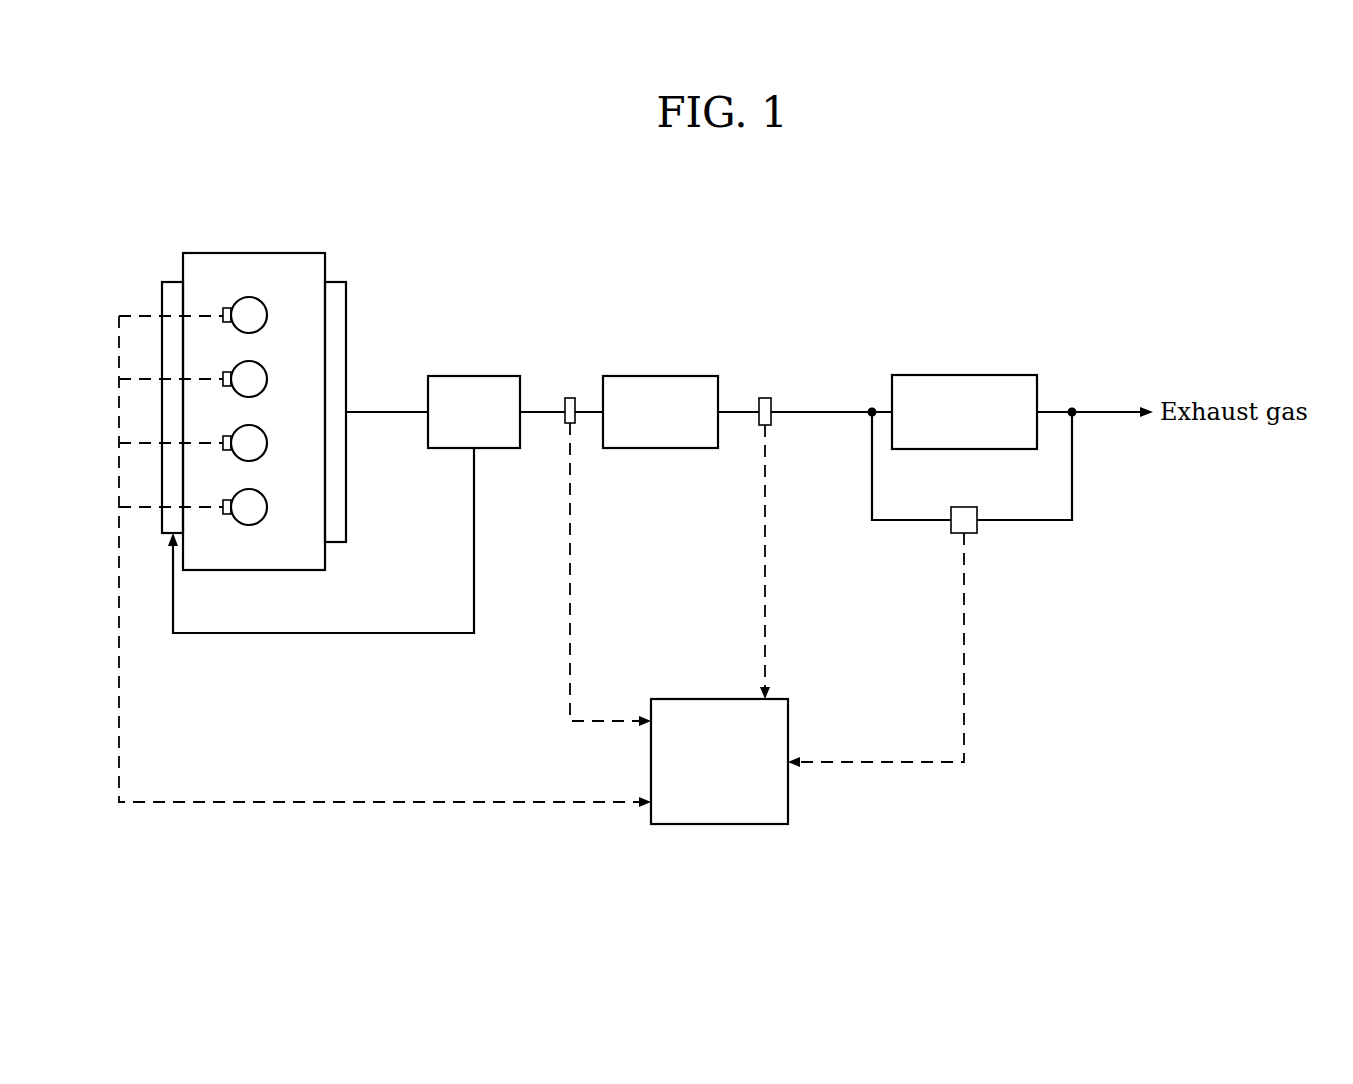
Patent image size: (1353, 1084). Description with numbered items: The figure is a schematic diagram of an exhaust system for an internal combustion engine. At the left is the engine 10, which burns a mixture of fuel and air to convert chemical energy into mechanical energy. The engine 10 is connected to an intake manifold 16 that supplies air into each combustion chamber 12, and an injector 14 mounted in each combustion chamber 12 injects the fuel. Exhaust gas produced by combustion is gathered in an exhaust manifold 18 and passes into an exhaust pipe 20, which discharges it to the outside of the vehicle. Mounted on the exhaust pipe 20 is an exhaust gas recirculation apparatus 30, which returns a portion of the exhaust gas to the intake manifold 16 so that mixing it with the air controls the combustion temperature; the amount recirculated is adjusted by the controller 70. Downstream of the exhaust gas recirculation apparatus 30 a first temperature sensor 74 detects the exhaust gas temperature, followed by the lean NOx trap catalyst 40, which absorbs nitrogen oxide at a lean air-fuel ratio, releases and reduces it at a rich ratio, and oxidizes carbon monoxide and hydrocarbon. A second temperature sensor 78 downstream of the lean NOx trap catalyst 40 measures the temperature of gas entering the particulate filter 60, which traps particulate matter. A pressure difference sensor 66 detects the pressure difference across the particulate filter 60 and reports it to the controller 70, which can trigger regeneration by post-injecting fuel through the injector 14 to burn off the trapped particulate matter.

The engine 10 is at (280, 230).
The combustion chamber 12 is at (249, 297).
The injector 14 is at (227, 307).
The intake manifold 16 is at (173, 281).
The exhaust manifold 18 is at (341, 282).
The exhaust pipe 20 is at (388, 412).
The exhaust gas recirculation apparatus 30 is at (474, 376).
The lean NOx trap catalyst 40 is at (654, 376).
The particulate filter 60 is at (965, 375).
The pressure difference sensor 66 is at (963, 535).
The controller 70 is at (713, 826).
The first temperature sensor 74 is at (570, 398).
The second temperature sensor 78 is at (765, 398).